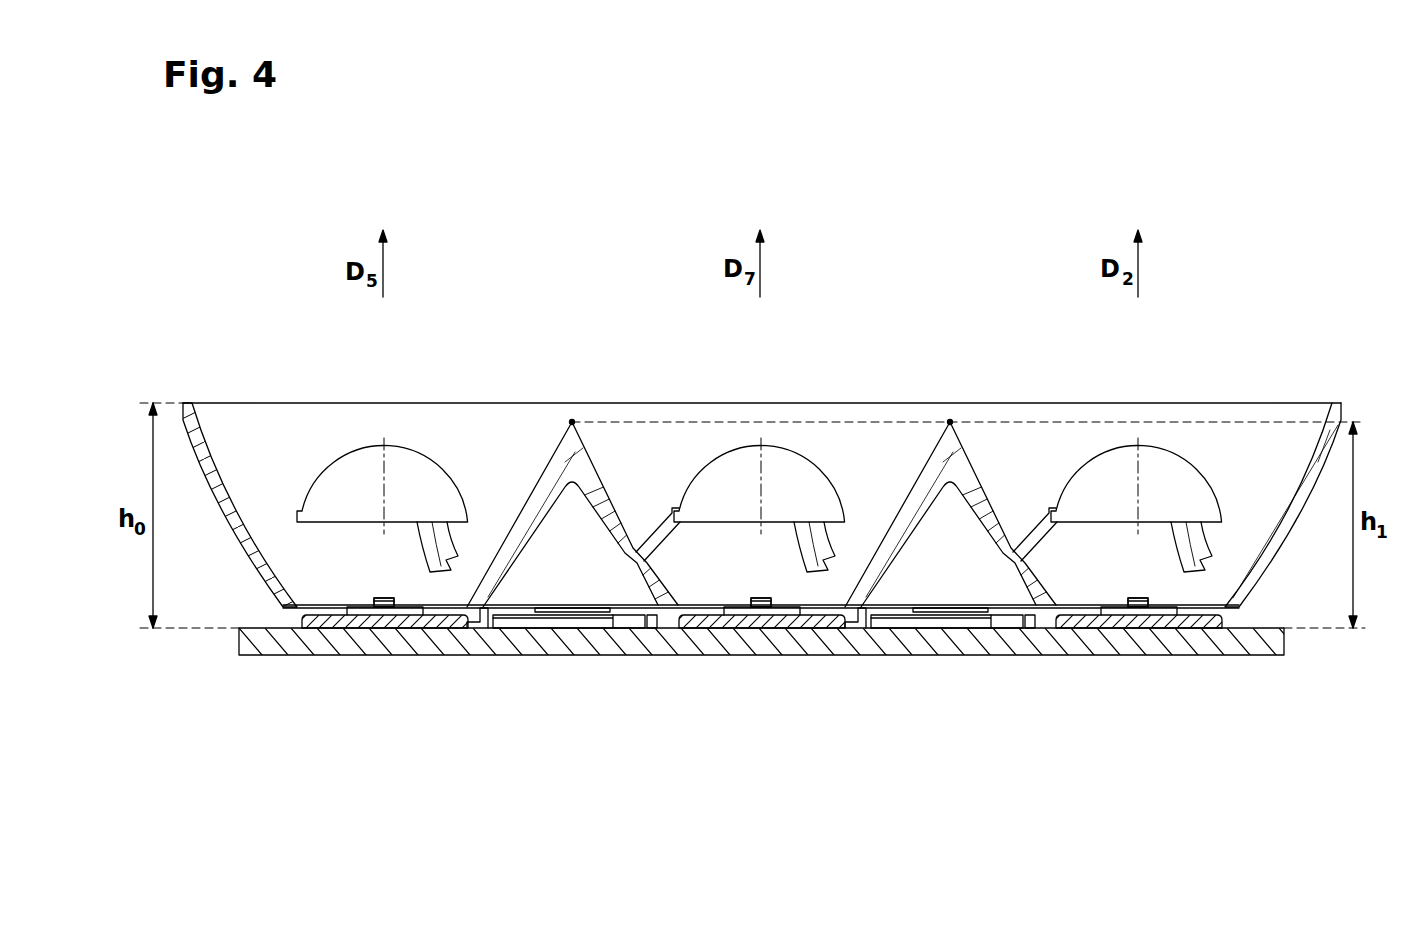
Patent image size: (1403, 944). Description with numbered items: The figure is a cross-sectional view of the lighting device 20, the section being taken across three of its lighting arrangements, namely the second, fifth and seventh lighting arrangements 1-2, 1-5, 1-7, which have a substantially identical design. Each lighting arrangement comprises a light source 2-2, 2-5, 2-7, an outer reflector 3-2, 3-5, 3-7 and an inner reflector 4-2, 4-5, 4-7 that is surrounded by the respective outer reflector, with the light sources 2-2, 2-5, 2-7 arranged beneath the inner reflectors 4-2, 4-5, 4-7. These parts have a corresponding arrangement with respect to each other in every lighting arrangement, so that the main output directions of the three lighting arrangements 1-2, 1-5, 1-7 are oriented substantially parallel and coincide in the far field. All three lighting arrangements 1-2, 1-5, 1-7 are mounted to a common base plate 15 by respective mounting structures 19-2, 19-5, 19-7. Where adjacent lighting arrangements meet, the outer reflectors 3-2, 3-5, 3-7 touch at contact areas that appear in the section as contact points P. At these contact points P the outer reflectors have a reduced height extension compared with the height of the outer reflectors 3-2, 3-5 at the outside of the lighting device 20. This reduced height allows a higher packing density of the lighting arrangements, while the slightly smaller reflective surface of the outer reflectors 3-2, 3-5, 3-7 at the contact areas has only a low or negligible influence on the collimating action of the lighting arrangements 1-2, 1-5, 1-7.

The lighting device 20 is at (272, 267).
The fifth lighting arrangement 1-5 is at (405, 490).
The seventh lighting arrangement 1-7 is at (764, 488).
The second lighting arrangement 1-2 is at (1140, 488).
The light source 2-5 is at (387, 609).
The light source 2-7 is at (764, 609).
The light source 2-2 is at (1142, 609).
The outer reflector 3-5 is at (226, 492).
The outer reflector 3-7 is at (606, 495).
The outer reflector 3-2 is at (984, 493).
The inner reflector 4-5 is at (452, 476).
The inner reflector 4-7 is at (829, 477).
The inner reflector 4-2 is at (1207, 479).
The mounting structure 19-5 is at (442, 623).
The mounting structure 19-7 is at (820, 623).
The mounting structure 19-2 is at (1198, 623).
The base plate 15 is at (913, 640).
The contact points P is at (572, 418).